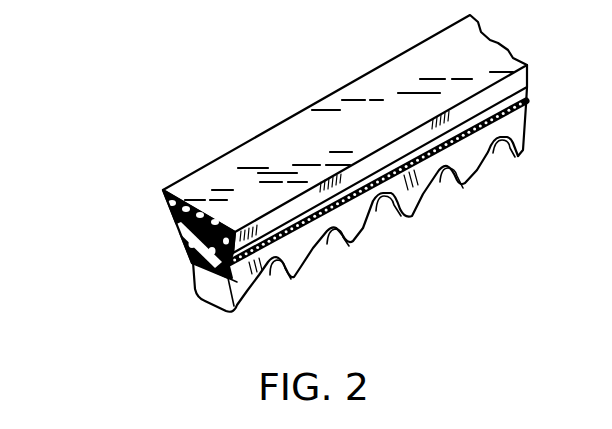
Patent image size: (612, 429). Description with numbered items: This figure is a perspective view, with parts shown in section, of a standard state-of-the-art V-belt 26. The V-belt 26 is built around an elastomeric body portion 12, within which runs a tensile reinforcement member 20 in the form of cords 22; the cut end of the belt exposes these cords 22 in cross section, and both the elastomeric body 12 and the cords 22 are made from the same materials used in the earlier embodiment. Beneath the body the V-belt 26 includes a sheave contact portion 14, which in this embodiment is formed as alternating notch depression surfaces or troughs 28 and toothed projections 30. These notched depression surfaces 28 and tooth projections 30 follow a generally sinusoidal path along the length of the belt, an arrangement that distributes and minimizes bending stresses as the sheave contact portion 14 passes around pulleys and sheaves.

The elastomeric body portion 12 is at (325, 134).
The sheave contact portion 14 is at (347, 252).
The tensile reinforcement member 20 is at (152, 214).
The cords 22 is at (178, 238).
The V-belt 26 is at (249, 122).
The notch depression surfaces 28 is at (440, 173).
The toothed projections 30 is at (468, 170).